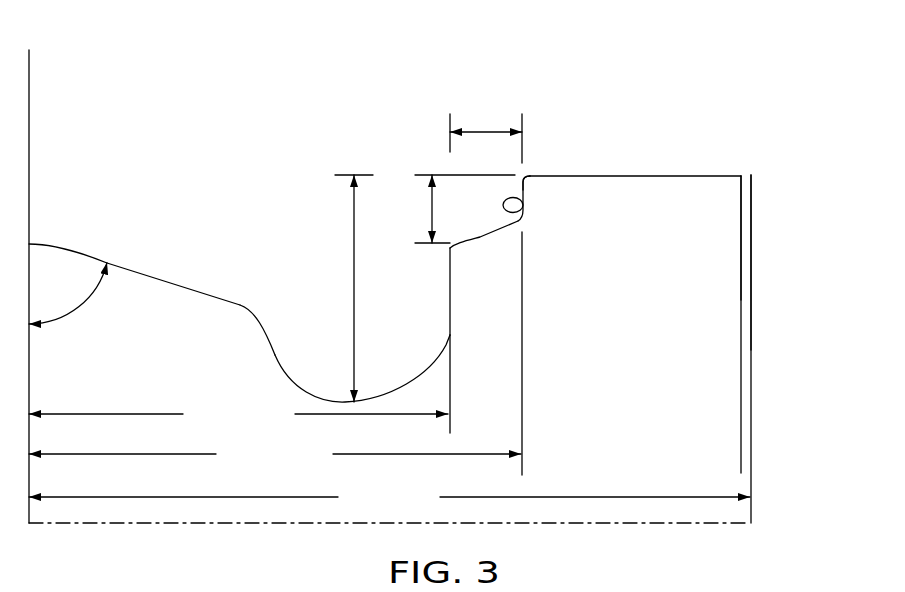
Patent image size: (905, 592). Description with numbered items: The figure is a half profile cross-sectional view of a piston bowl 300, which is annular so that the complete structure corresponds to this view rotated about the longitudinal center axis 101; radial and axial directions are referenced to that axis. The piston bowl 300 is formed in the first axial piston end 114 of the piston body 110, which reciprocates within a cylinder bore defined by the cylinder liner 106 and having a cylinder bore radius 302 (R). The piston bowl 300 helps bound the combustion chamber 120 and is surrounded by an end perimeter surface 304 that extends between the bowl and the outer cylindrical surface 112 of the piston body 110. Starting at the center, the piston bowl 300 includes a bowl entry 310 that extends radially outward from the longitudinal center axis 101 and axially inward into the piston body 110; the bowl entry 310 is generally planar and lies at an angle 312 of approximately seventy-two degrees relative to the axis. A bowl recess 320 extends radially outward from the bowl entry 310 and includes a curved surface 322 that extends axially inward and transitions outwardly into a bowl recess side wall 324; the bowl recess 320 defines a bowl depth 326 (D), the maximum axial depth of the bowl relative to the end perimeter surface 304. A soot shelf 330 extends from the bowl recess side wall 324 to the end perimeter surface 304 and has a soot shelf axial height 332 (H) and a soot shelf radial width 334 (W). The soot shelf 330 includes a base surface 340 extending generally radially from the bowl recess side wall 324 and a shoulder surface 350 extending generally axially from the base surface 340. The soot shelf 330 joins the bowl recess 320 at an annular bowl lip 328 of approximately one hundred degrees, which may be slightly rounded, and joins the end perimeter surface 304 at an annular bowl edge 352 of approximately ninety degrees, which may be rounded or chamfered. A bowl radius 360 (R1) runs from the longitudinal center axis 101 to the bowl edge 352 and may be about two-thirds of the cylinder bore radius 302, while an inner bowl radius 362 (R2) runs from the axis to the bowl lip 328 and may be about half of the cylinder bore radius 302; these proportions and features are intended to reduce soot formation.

The longitudinal center axis 101 is at (29, 93).
The cylinder liner 106 is at (752, 352).
The piston body 110 is at (718, 222).
The outer cylindrical surface 112 is at (742, 262).
The first axial piston end 114 is at (699, 204).
The combustion chamber 120 is at (330, 285).
The piston bowl 300 is at (258, 231).
The cylinder bore radius 302 is at (389, 496).
The end perimeter surface 304 is at (637, 177).
The bowl entry 310 is at (134, 270).
The angle 312 is at (80, 303).
The bowl recess 320 is at (303, 380).
The curved surface 322 is at (263, 333).
The bowl recess side wall 324 is at (450, 287).
The bowl depth 326 is at (353, 230).
The bowl lip 328 is at (450, 248).
The soot shelf 330 is at (473, 213).
The soot shelf axial height 332 is at (428, 210).
The soot shelf radial width 334 is at (485, 131).
The base surface 340 is at (495, 228).
The shoulder surface 350 is at (523, 208).
The bowl edge 352 is at (523, 177).
The bowl radius 360 is at (275, 353).
The inner bowl radius 362 is at (239, 384).